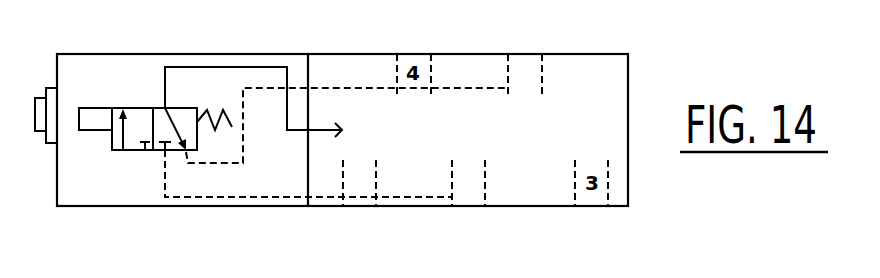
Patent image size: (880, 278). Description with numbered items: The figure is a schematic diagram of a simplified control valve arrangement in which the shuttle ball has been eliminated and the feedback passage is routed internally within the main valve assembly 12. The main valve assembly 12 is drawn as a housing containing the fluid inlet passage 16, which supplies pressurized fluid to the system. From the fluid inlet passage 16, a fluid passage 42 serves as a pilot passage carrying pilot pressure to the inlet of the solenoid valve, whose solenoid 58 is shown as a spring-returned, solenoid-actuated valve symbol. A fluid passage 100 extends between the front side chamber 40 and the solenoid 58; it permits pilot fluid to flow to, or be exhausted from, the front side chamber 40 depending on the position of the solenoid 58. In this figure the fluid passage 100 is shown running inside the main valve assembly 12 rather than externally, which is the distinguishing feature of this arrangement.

The main valve assembly 12 is at (578, 54).
The fluid inlet passage 16 is at (486, 181).
The front side chamber 40 is at (543, 81).
The fluid passage 42 is at (407, 195).
The solenoid 58 is at (80, 130).
The fluid passage 100 is at (365, 87).